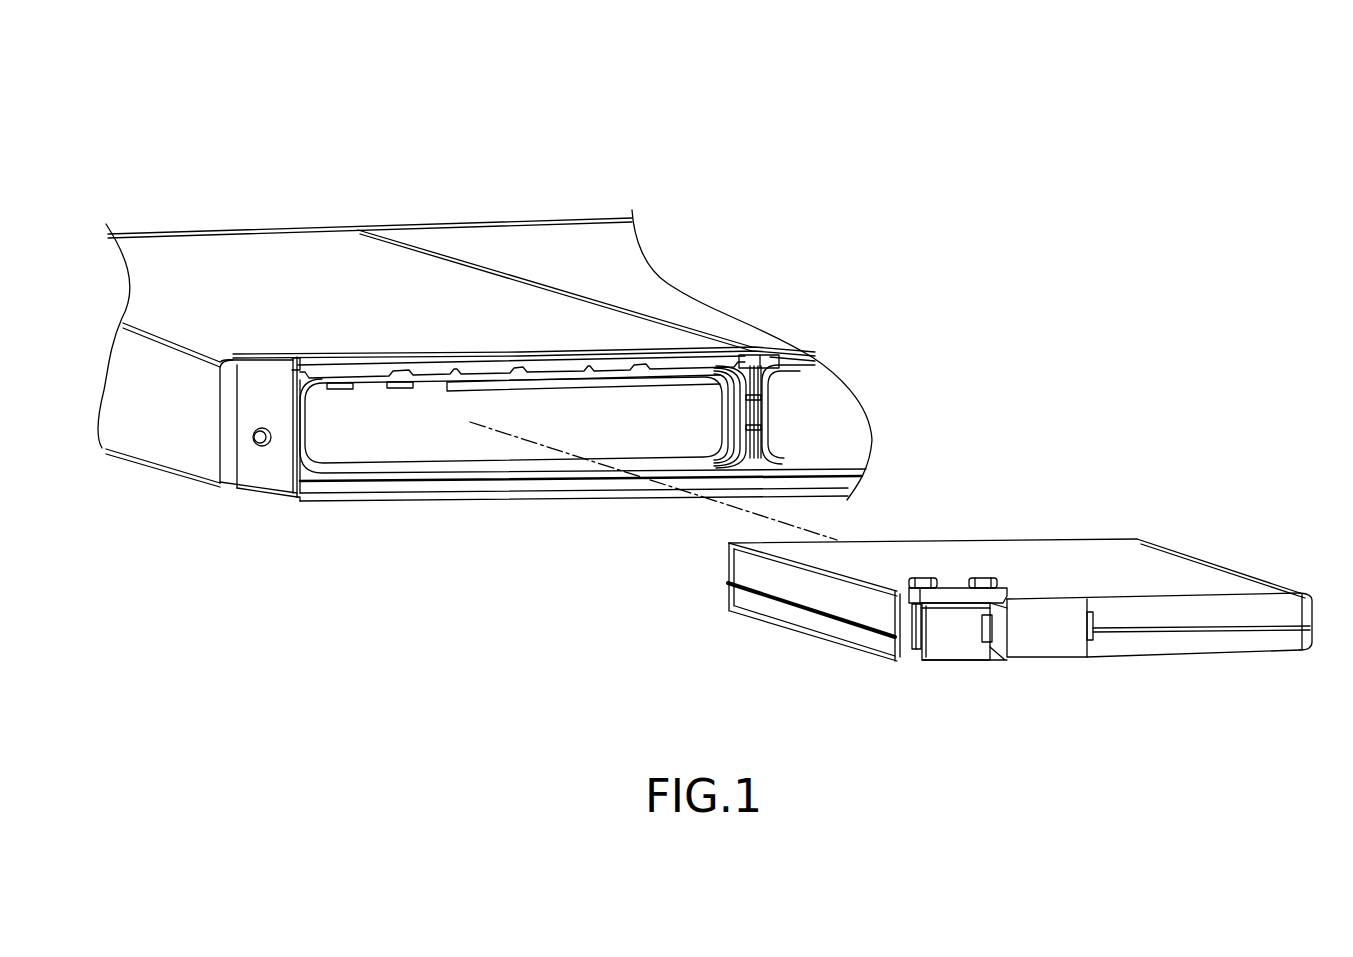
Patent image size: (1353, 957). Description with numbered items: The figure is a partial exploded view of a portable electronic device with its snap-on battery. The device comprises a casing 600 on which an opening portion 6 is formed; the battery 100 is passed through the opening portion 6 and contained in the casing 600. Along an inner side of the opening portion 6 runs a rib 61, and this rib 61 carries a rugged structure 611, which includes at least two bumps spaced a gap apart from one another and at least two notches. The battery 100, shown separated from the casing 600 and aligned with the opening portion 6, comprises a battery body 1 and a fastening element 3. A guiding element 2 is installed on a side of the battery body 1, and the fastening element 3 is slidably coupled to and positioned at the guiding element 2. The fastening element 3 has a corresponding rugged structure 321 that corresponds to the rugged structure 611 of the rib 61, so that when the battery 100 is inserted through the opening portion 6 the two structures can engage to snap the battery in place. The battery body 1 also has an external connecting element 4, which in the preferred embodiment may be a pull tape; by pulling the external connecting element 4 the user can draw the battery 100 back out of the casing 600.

The casing 600 is at (542, 212).
The battery 100 is at (1117, 510).
The battery body 1 is at (1032, 563).
The corresponding rugged structure 321 is at (958, 578).
The guiding element 2 is at (904, 652).
The fastening element 3 is at (949, 652).
The external connecting element 4 is at (1058, 653).
The opening portion 6 is at (425, 438).
The rib 61 is at (592, 378).
The rugged structure 611 is at (371, 389).